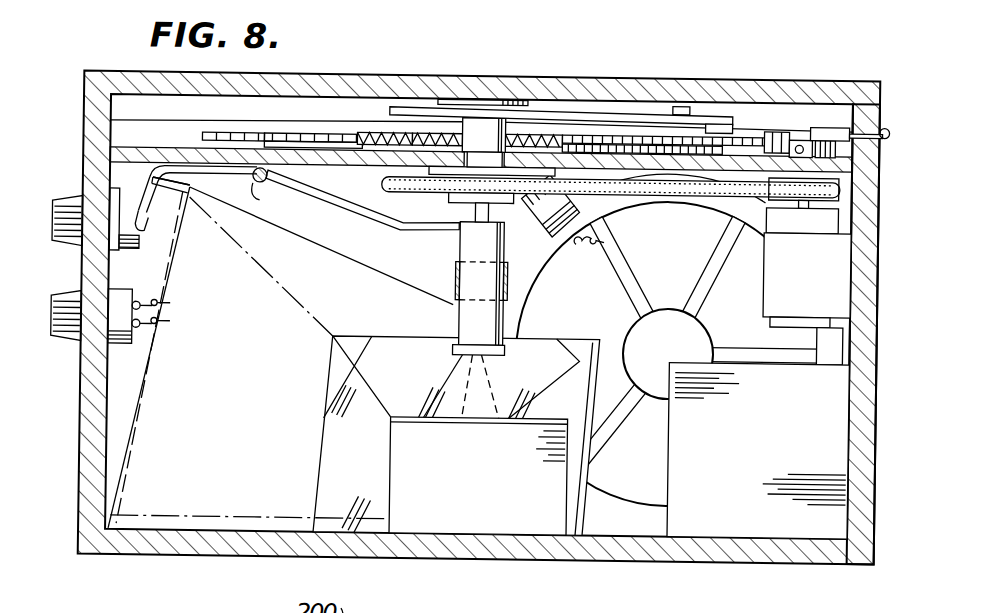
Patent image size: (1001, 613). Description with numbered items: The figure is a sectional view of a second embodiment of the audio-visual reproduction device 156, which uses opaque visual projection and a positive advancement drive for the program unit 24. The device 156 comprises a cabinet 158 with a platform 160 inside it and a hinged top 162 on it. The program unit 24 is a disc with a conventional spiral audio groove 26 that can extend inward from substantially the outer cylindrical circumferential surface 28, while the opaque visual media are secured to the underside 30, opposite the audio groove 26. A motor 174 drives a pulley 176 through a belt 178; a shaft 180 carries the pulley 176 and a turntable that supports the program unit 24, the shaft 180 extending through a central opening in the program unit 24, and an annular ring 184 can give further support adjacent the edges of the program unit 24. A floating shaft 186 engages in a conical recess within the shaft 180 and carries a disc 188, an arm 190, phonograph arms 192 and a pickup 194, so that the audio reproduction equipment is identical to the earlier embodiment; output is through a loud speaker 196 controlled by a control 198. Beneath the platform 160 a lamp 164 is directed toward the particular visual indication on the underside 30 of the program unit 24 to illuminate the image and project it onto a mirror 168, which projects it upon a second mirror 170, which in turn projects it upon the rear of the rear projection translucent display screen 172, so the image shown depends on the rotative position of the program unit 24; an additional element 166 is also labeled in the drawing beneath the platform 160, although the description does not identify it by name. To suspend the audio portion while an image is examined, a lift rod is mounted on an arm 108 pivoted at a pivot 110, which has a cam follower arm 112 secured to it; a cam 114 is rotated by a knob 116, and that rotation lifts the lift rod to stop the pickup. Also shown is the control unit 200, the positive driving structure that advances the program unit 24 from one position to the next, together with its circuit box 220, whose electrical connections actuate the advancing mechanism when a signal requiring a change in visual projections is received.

The program unit 24 is at (287, 133).
The audio groove 26 is at (366, 137).
The outer cylindrical circumferential surface 28 is at (198, 139).
The underside 30 is at (322, 142).
The arm 108 is at (378, 214).
The pivot 110 is at (257, 186).
The cam follower arm 112 is at (182, 224).
The cam 114 is at (121, 249).
The knob 116 is at (68, 204).
The audio-visual reproduction device 156 is at (632, 566).
The cabinet 158 is at (858, 424).
The platform 160 is at (840, 161).
The hinged top 162 is at (595, 107).
The lamp 164 is at (588, 204).
The cylinder 166 is at (467, 244).
The mirror 168 is at (537, 514).
The mirror 170 is at (337, 436).
The rear projection translucent display screen 172 is at (147, 382).
The motor 174 is at (817, 258).
The pulley 176 is at (440, 186).
The belt 178 is at (714, 197).
The shaft 180 is at (480, 128).
The annular ring 184 is at (368, 110).
The floating shaft 186 is at (470, 122).
The disc 188 is at (541, 112).
The arm 190 is at (610, 110).
The phonograph arms 192 is at (655, 108).
The pickup 194 is at (725, 121).
The loud speaker 196 is at (627, 283).
The control 198 is at (62, 328).
The control unit 200 is at (801, 120).
The circuit box 220 is at (784, 451).